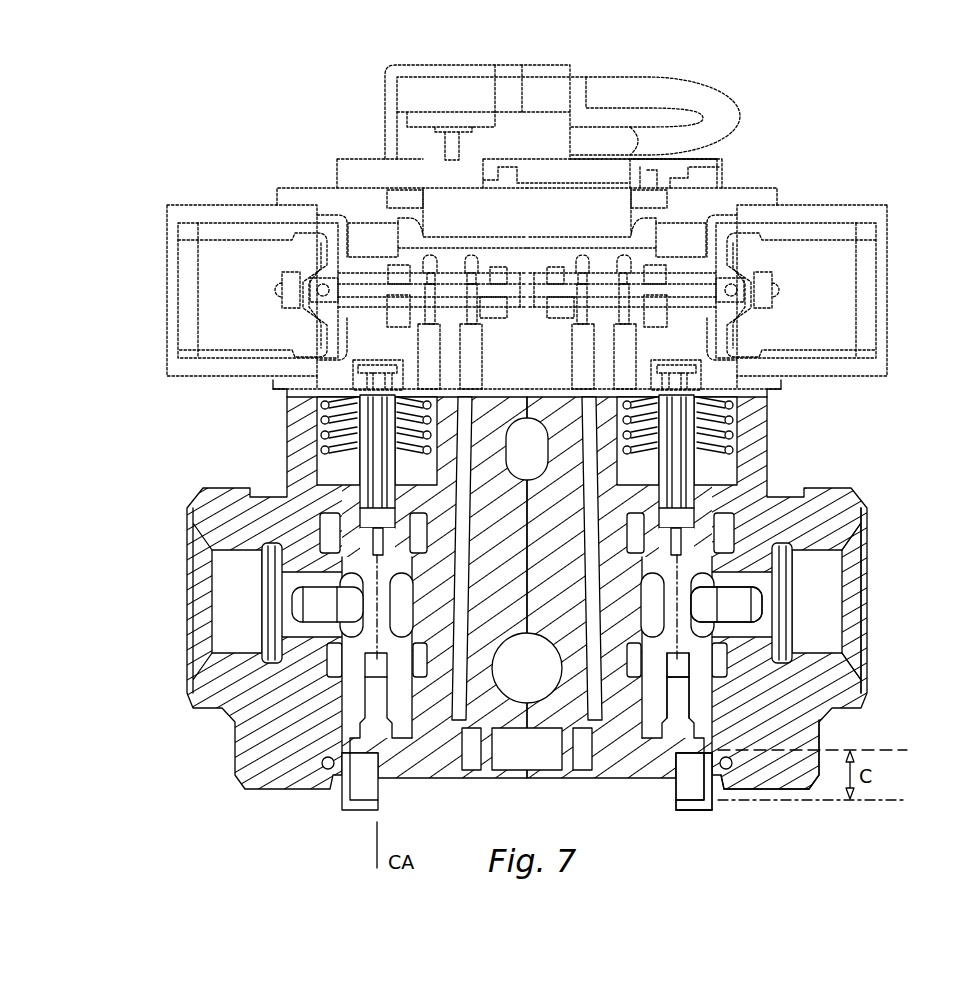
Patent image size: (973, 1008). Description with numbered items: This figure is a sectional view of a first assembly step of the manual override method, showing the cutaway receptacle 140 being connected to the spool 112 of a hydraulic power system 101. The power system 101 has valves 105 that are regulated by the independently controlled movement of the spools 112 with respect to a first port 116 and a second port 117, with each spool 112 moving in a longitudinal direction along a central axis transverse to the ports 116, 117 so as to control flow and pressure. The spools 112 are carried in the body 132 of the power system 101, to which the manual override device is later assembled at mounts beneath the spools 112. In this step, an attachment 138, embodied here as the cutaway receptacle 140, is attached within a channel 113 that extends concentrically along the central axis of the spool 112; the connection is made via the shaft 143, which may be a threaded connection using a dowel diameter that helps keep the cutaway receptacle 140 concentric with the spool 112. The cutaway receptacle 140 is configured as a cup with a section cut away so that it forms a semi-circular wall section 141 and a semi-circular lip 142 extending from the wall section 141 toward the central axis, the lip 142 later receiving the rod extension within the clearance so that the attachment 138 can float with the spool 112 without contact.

The hydraulic power system 101 is at (905, 157).
The valve 105 is at (337, 580).
The spool 112 is at (690, 547).
The channel 113 is at (700, 640).
The first port 116 is at (187, 600).
The second port 117 is at (870, 616).
The body 132 is at (780, 726).
The attachment 138 is at (772, 802).
The cutaway receptacle 140 is at (728, 820).
The semi-circular wall section 141 is at (703, 794).
The semi-circular lip 142 is at (694, 812).
The shaft 143 is at (790, 672).